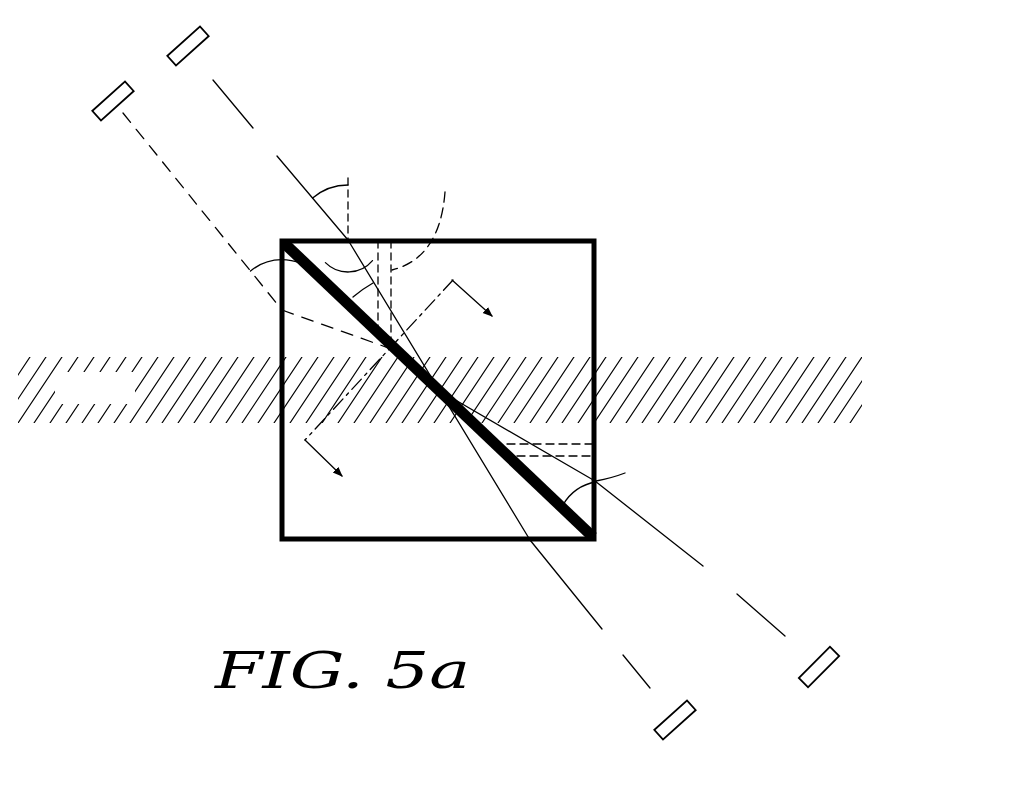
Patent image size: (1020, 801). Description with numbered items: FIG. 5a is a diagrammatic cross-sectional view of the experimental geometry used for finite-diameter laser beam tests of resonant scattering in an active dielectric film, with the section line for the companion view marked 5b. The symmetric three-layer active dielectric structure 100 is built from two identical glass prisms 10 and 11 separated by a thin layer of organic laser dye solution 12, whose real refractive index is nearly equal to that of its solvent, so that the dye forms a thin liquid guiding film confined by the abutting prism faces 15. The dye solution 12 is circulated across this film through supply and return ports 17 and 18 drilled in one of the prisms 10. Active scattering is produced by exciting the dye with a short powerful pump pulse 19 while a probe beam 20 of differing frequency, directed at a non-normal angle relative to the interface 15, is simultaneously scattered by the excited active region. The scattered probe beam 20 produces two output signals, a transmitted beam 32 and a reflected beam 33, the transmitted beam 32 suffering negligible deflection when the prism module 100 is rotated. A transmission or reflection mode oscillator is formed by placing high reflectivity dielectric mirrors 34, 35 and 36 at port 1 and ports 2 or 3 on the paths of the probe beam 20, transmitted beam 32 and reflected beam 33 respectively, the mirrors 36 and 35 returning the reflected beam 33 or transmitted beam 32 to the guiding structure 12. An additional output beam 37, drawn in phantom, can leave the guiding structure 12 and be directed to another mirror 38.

The port 1 is at (208, 68).
The port 2 is at (654, 696).
The port 3 is at (797, 650).
The glass prism 10 is at (583, 279).
The glass prism 11 is at (298, 487).
The organic laser dye solution 12 is at (597, 517).
The prism faces 15 is at (283, 310).
The supply port 17 is at (592, 440).
The return port 18 is at (424, 221).
The pump pulse 19 is at (185, 357).
The probe beam 20 is at (245, 110).
The transmitted beam 32 is at (565, 583).
The reflected beam 33 is at (657, 525).
The high reflectivity dielectric mirror 34 is at (205, 37).
The high reflectivity dielectric mirror 35 is at (690, 713).
The high reflectivity dielectric mirror 36 is at (835, 660).
The additional output beam 37 is at (170, 163).
The mirror 38 is at (108, 115).
The symmetric three-layer active dielectric structure 100 is at (523, 235).
The section line for FIG. 5b is at (415, 392).